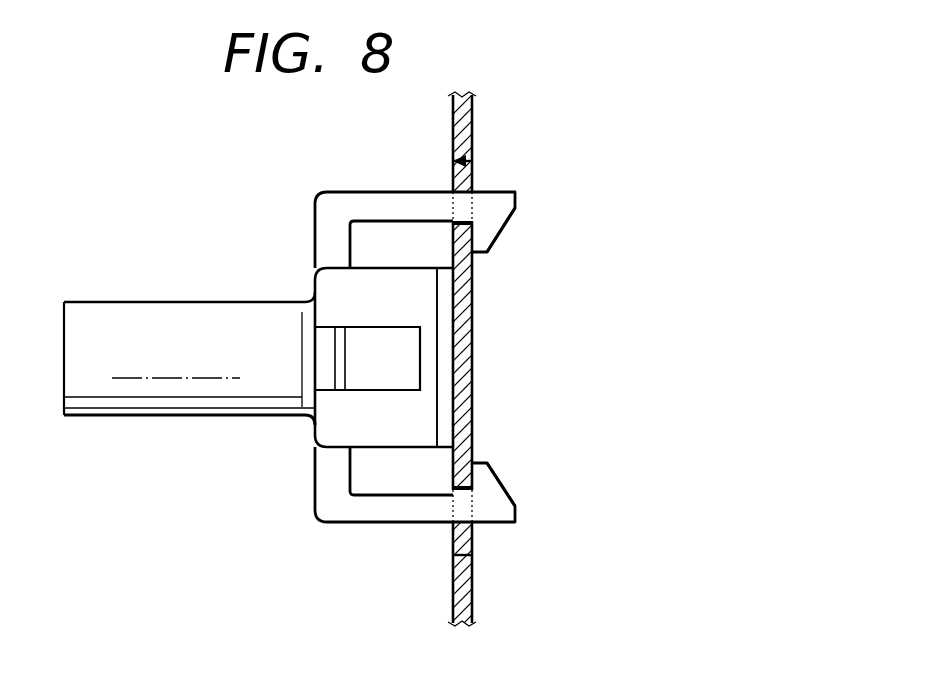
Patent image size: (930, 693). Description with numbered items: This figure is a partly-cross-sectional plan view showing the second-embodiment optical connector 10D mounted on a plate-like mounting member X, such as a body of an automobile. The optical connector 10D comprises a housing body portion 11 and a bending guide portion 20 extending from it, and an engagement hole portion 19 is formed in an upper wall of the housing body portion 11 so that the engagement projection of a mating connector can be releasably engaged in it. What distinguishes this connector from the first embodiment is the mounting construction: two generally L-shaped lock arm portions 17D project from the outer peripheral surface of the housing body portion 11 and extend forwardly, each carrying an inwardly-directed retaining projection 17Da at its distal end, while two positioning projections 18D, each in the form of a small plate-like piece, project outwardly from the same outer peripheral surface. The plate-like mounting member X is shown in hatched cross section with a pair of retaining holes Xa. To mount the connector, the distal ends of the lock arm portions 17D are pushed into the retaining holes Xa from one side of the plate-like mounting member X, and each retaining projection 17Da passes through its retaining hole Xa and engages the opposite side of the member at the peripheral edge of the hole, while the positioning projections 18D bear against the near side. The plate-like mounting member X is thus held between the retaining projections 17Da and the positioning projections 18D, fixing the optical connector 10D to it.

The optical connector 10D is at (240, 252).
The housing body portion 11 is at (412, 402).
The lock arm portion 17D is at (417, 197).
The retaining projection 17Da is at (487, 248).
The positioning projection 18D is at (447, 313).
The engagement hole portion 19 is at (420, 357).
The bending guide portion 20 is at (132, 403).
The plate-like mounting member X is at (472, 108).
The retaining hole Xa is at (472, 168).